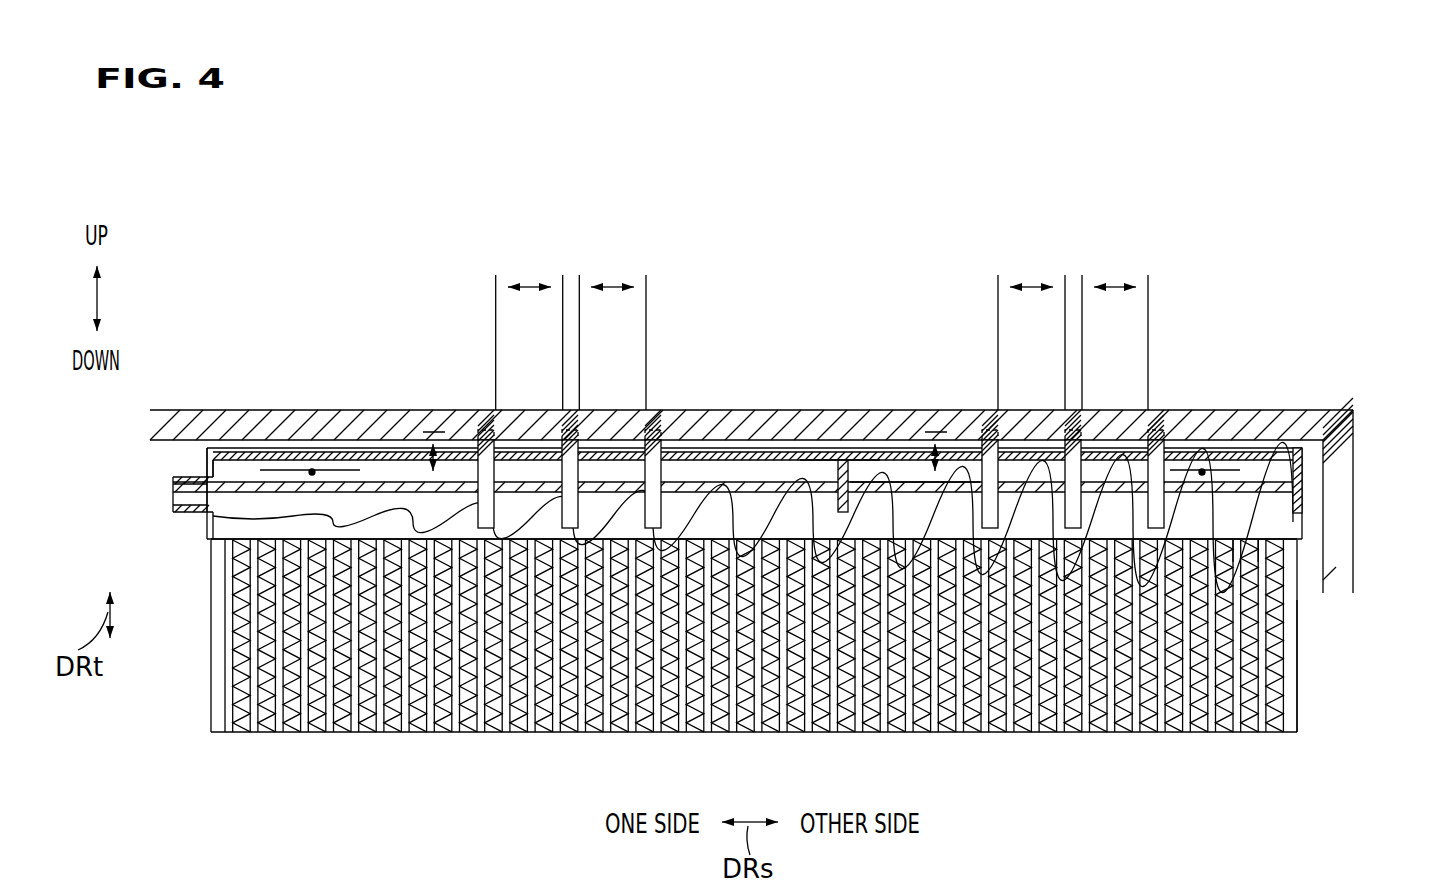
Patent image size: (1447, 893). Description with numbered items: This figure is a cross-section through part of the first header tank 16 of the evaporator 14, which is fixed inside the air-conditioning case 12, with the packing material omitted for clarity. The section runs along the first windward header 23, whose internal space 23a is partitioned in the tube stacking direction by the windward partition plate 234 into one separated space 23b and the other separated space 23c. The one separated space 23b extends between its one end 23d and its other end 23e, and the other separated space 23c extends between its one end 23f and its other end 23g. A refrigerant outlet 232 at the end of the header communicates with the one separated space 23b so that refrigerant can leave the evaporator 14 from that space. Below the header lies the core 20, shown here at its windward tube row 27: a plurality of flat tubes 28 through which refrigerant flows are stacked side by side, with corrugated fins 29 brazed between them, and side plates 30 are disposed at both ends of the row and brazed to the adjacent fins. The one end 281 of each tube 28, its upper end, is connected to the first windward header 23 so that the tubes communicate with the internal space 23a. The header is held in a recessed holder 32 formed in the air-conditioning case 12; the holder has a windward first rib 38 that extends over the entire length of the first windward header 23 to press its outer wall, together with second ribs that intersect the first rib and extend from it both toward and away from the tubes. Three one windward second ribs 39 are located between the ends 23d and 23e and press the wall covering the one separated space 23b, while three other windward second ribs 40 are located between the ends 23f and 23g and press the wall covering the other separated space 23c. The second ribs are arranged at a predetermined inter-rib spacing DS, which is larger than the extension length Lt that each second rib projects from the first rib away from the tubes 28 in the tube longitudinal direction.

The air-conditioning case 12 is at (1358, 392).
The evaporator 14 is at (188, 741).
The first header tank 16 is at (172, 465).
The core 20 is at (1310, 730).
The first windward header 23 is at (262, 450).
The internal space 23a is at (1270, 498).
The one separated space 23b is at (312, 470).
The other separated space 23c is at (1202, 470).
The one end of the one separated space 23d is at (205, 458).
The other end of the one separated space 23e is at (870, 475).
The one end of the other separated space 23f is at (843, 462).
The other end of the other separated space 23g is at (1300, 467).
The refrigerant outlet 232 is at (172, 498).
The windward partition plate 234 is at (843, 500).
The windward tube row 27 is at (1298, 715).
The tubes 28 is at (257, 621).
The one end of the tube 281 is at (1240, 530).
The corrugated fins 29 is at (285, 563).
The side plates 30 is at (220, 665).
The holder 32 is at (1316, 406).
The windward first rib 38 is at (735, 482).
The one windward second rib 39 is at (480, 470).
The other windward second rib 40 is at (988, 470).
The inter-rib spacing DS is at (533, 280).
The extension length Lt is at (430, 432).